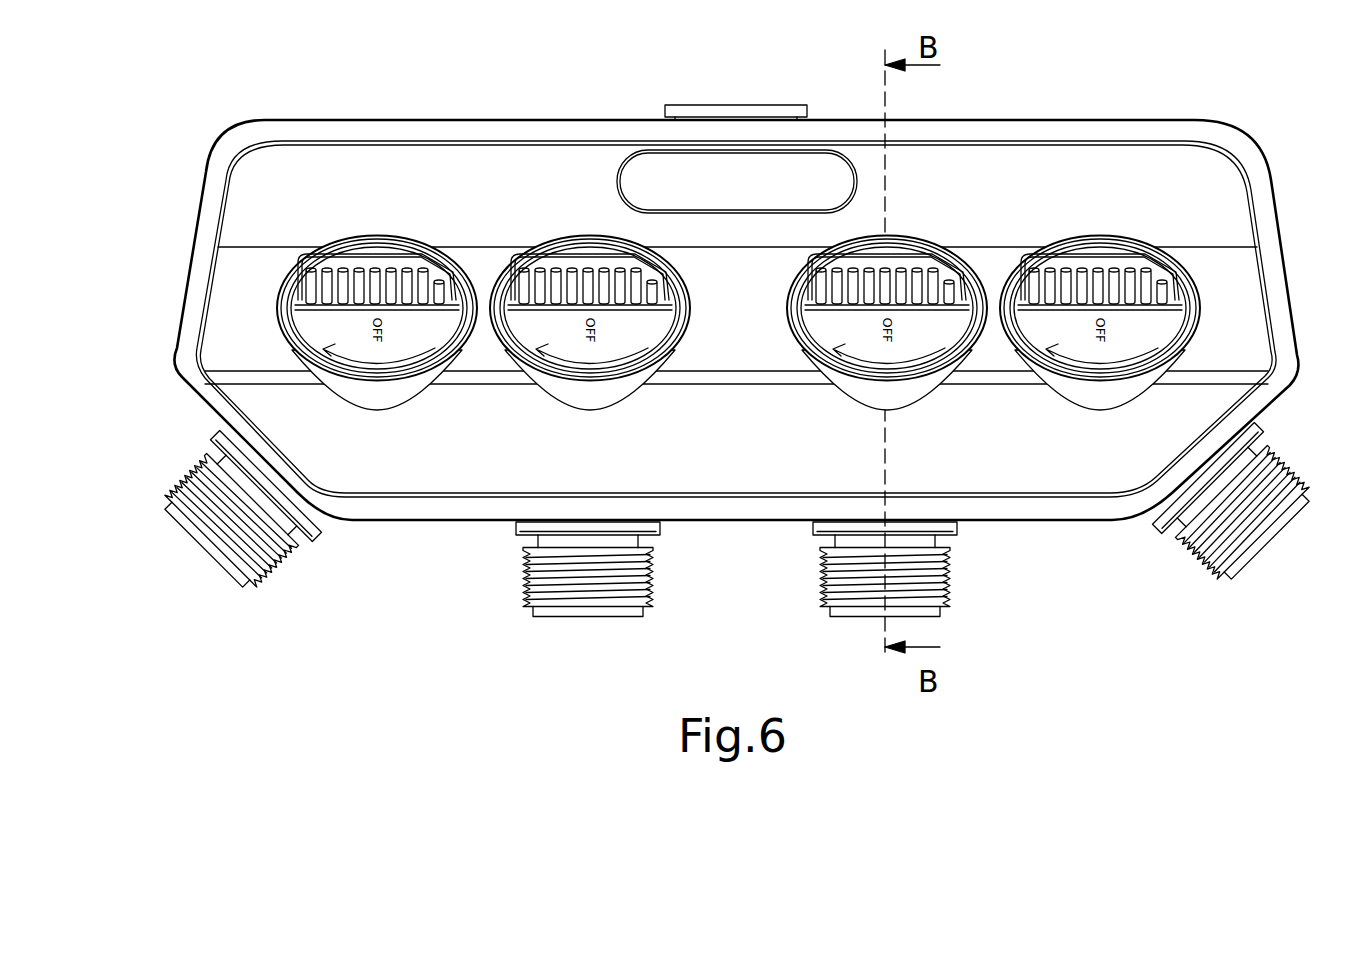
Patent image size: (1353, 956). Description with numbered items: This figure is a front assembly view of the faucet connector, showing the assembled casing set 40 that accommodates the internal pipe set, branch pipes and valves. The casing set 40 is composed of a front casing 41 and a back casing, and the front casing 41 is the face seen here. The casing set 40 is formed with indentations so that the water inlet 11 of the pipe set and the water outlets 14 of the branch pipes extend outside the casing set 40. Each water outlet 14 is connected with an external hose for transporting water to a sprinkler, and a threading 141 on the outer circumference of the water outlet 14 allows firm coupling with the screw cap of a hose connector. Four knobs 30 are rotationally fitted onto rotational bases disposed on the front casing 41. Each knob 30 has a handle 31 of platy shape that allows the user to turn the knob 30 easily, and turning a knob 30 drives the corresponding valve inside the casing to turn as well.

The water inlet 11 is at (735, 105).
The water outlet 14 is at (732, 542).
The threading 141 is at (555, 596).
The knob 30 is at (724, 287).
The handle 31 is at (349, 259).
The casing set 40 is at (1100, 92).
The front casing 41 is at (403, 132).